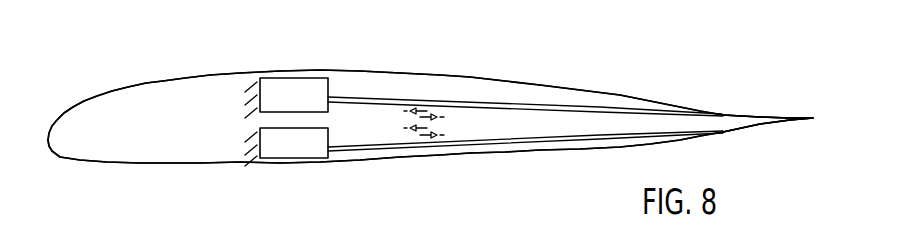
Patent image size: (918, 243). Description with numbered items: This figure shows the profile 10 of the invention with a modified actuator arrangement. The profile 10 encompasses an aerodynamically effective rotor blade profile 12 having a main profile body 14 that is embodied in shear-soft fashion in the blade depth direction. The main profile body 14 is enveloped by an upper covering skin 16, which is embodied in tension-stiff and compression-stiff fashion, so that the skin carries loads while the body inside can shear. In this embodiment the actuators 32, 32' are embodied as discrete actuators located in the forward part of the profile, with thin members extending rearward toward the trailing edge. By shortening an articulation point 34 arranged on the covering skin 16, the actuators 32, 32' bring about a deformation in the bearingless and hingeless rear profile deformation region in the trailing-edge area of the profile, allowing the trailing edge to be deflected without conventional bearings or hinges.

The profile 10 is at (84, 51).
The rotor blade profile 12 is at (161, 64).
The main profile body 14 is at (273, 71).
The upper covering skin 16 is at (212, 164).
The actuator 32 is at (304, 150).
The actuator 32' is at (294, 158).
The articulation point 34 is at (733, 132).